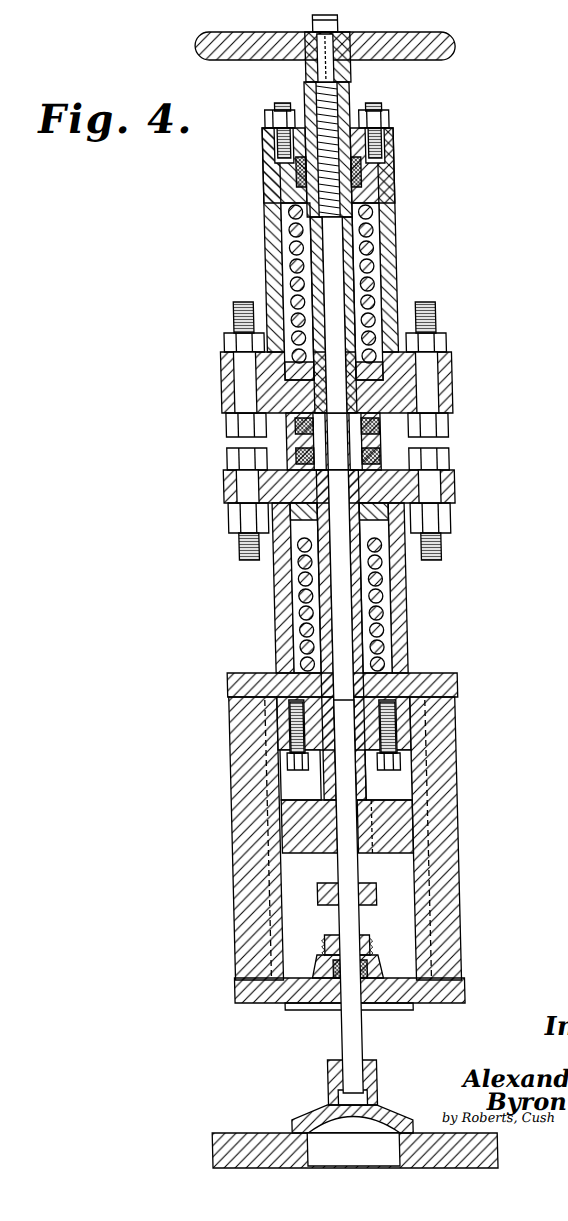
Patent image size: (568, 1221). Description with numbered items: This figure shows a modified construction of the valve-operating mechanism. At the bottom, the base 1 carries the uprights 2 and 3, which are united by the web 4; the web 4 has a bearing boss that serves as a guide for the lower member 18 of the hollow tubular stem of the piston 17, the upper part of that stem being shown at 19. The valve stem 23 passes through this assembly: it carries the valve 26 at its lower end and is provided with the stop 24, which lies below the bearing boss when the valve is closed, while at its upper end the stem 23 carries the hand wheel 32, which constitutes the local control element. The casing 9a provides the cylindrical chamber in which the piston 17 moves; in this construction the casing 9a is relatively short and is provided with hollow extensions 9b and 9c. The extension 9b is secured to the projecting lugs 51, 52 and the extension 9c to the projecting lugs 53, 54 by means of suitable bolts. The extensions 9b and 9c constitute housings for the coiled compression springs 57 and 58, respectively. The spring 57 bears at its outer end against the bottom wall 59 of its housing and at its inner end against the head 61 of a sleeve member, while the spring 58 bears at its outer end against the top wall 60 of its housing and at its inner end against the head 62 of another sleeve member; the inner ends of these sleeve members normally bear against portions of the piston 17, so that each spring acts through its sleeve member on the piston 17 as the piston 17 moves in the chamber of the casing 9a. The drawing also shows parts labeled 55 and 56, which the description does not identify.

The base 1 is at (446, 990).
The upright 2 is at (430, 800).
The upright 3 is at (225, 830).
The web 4 is at (380, 850).
The casing 9a is at (275, 442).
The hollow extension 9b is at (267, 630).
The hollow extension 9c is at (268, 268).
The piston 17 is at (372, 442).
The lower member of the hollow tubular stem 18 is at (341, 593).
The upper part of the hollow tubular stem 19 is at (343, 290).
The valve stem 23 is at (325, 1030).
The stop 24 is at (311, 903).
The valve 26 is at (290, 1118).
The hand wheel 32 is at (455, 44).
The projecting lug 51 is at (438, 488).
The projecting lug 52 is at (224, 493).
The projecting lug 53 is at (432, 398).
The projecting lug 54 is at (224, 395).
The spring 55 is at (365, 650).
The spring 56 is at (370, 248).
The coiled compression spring 57 is at (292, 595).
The coiled compression spring 58 is at (285, 230).
The bottom wall 59 is at (277, 670).
The top wall 60 is at (393, 196).
The head of sleeve member 61 is at (423, 512).
The head of sleeve member 62 is at (403, 366).